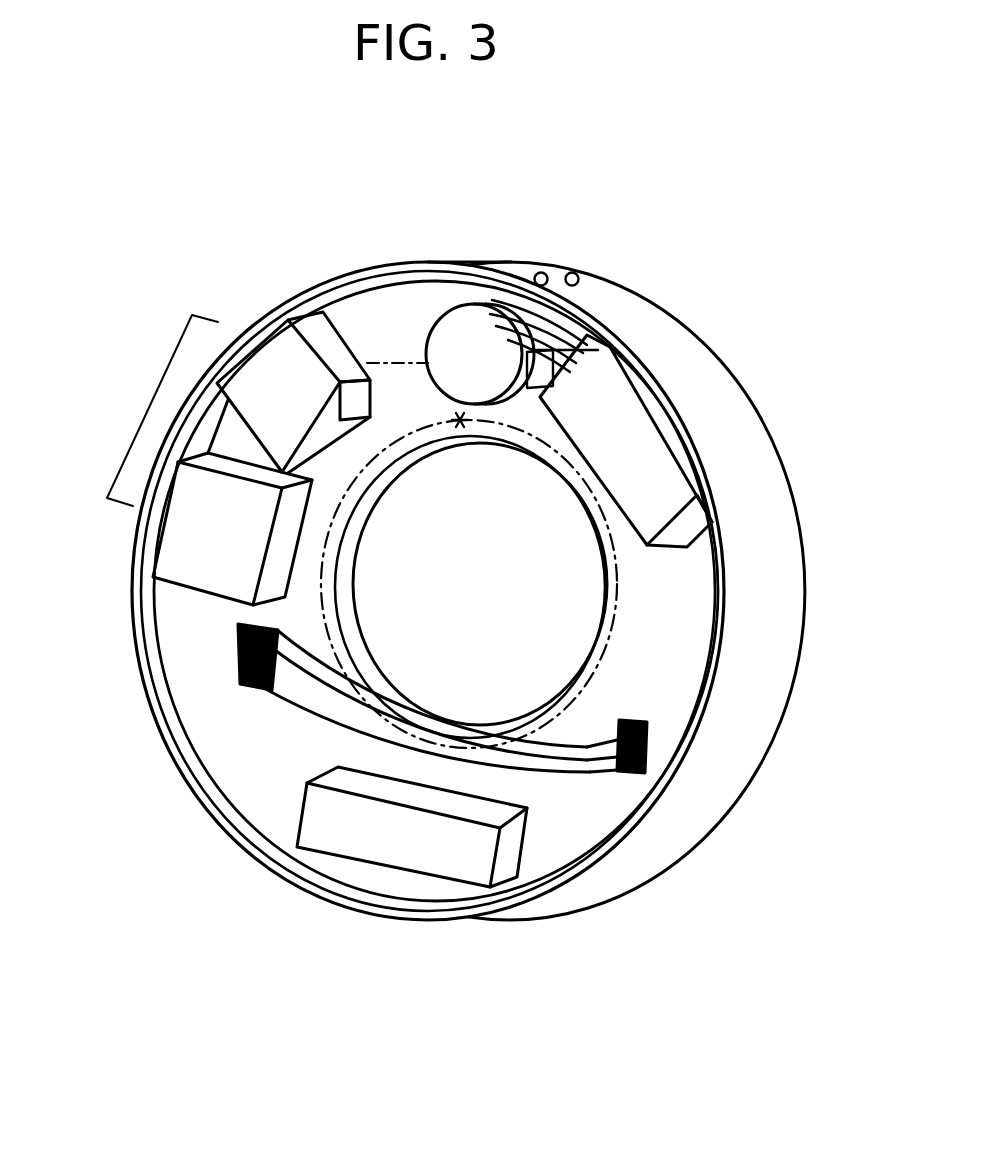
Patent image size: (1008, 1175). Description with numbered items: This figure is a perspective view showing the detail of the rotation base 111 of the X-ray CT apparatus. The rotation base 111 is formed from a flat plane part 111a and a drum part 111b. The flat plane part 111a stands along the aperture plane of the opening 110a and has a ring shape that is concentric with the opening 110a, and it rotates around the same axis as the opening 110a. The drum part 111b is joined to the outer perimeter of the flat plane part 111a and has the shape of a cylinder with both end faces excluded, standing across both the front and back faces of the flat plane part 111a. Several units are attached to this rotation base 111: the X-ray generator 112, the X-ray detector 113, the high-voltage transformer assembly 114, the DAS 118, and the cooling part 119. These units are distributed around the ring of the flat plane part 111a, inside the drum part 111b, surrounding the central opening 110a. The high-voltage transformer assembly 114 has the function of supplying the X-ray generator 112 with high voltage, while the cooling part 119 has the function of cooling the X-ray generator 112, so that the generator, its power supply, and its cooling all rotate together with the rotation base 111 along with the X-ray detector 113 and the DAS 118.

The rotation base 111 is at (426, 256).
The flat plane part 111a is at (252, 725).
The drum part 111b is at (630, 313).
The opening 110a is at (540, 677).
The X-ray generator 112 is at (468, 320).
The X-ray detector 113 is at (550, 772).
The high-voltage transformer assembly 114 is at (152, 403).
The DAS 118 is at (333, 837).
The cooling part 119 is at (660, 490).